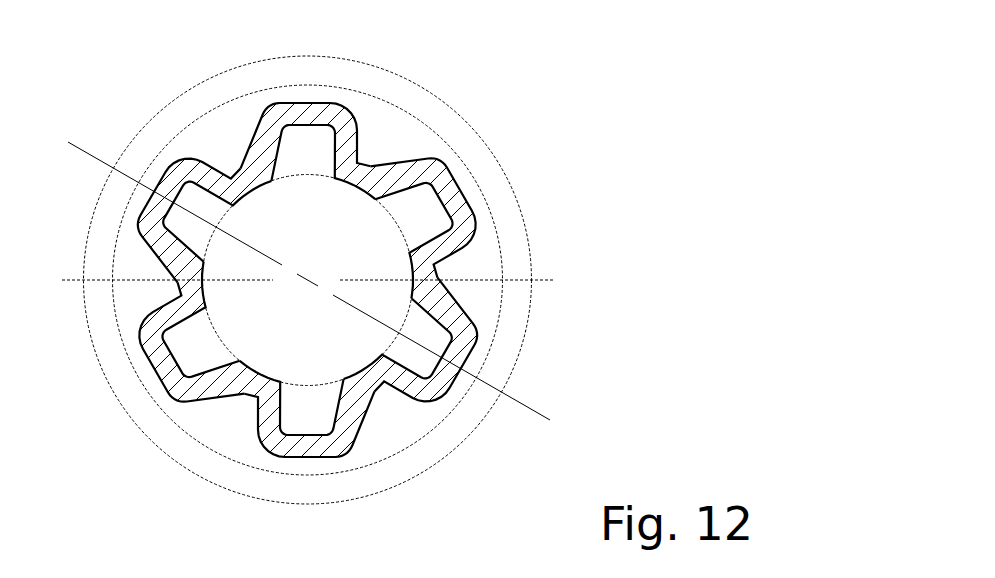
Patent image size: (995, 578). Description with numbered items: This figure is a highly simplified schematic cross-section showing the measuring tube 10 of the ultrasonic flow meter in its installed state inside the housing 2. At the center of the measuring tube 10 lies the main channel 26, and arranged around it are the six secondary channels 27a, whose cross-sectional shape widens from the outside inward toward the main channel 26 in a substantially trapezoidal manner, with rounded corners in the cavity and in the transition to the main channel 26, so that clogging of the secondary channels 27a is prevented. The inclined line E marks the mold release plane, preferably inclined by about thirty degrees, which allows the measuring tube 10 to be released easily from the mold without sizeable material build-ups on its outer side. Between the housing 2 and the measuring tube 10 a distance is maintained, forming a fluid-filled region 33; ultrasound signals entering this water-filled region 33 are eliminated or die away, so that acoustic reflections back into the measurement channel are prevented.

The housing 2 is at (340, 280).
The region 33 is at (306, 240).
The main channel 26 is at (307, 280).
The measuring tube 10 is at (357, 327).
The mold release plane E is at (330, 287).
The secondary channel 27a is at (141, 407).